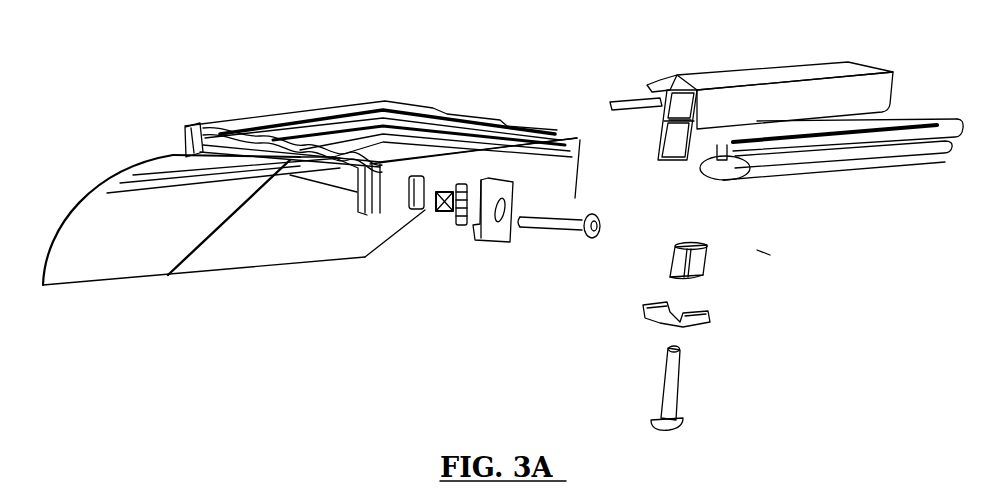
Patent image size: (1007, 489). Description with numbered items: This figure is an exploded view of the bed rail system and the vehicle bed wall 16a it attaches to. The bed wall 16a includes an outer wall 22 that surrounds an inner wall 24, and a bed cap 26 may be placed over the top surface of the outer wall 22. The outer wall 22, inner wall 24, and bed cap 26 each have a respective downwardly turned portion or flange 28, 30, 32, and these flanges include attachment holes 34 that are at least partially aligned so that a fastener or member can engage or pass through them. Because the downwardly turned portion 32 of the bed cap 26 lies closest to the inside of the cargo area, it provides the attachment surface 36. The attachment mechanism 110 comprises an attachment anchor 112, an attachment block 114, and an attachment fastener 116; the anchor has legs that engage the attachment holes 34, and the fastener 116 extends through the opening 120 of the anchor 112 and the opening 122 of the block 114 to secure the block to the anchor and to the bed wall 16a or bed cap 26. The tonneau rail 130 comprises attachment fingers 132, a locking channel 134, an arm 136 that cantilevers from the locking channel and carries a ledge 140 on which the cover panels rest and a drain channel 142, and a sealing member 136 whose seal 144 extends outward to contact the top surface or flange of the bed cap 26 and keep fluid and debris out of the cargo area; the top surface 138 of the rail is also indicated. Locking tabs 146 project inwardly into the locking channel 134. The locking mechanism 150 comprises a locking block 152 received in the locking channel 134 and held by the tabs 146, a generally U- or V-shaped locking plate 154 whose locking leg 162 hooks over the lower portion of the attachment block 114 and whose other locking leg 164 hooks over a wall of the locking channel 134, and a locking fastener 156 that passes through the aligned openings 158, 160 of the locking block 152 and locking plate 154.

The bed wall 16a is at (329, 103).
The outer wall 22 is at (135, 232).
The inner wall 24 is at (262, 230).
The bed cap 26 is at (277, 123).
The downwardly turned portion or flange of the outer wall 28 is at (360, 198).
The downwardly turned portion or flange of the inner wall 30 is at (357, 195).
The downwardly turned portion or flange of the bed cap 32 is at (567, 158).
The attachment holes 34 is at (415, 175).
The attachment surface 36 is at (552, 182).
The attachment mechanism 110 is at (495, 222).
The attachment anchor 112 is at (436, 225).
The attachment block 114 is at (513, 187).
The attachment fastener 116 is at (541, 232).
The opening of the attachment anchor 120 is at (462, 222).
The opening of the attachment block 122 is at (507, 207).
The tonneau rail 130 is at (772, 116).
The attachment fingers 132 is at (660, 86).
The locking channel 134 is at (688, 90).
The arm / sealing member 136 is at (878, 170).
The top surface 138 is at (848, 70).
The ledge 140 is at (790, 150).
The drain channel 142 is at (740, 174).
The seal 144 is at (640, 98).
The locking tabs 146 is at (667, 158).
The locking mechanism 150 is at (762, 350).
The locking block 152 is at (674, 248).
The locking plate 154 is at (668, 324).
The locking fastener 156 is at (658, 393).
The opening of the locking block 158 is at (693, 241).
The opening of the locking plate 160 is at (680, 316).
The locking leg 162 is at (647, 310).
The locking leg 164 is at (707, 330).